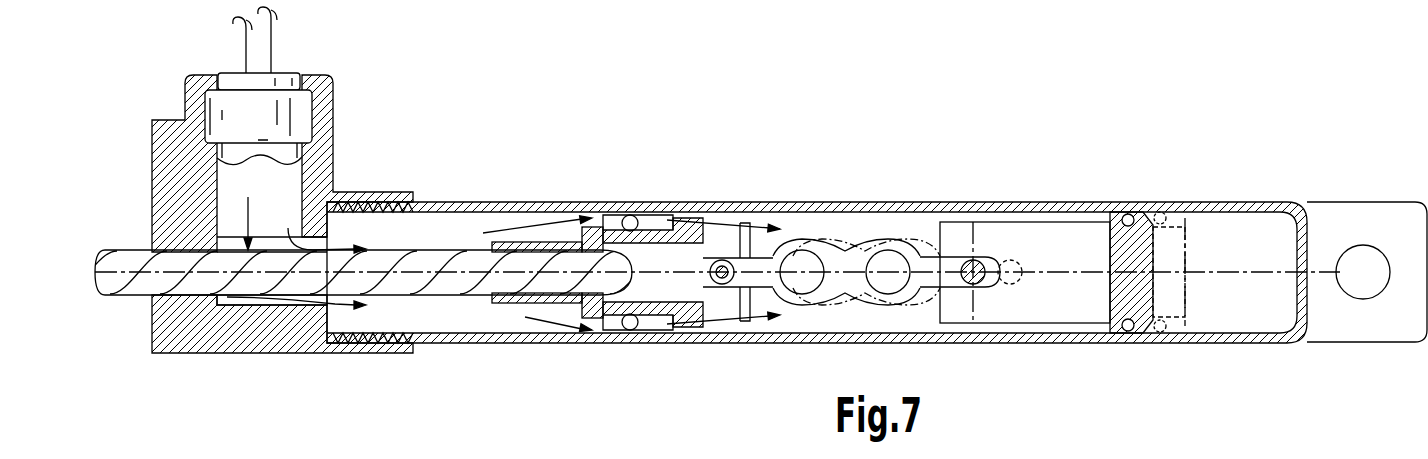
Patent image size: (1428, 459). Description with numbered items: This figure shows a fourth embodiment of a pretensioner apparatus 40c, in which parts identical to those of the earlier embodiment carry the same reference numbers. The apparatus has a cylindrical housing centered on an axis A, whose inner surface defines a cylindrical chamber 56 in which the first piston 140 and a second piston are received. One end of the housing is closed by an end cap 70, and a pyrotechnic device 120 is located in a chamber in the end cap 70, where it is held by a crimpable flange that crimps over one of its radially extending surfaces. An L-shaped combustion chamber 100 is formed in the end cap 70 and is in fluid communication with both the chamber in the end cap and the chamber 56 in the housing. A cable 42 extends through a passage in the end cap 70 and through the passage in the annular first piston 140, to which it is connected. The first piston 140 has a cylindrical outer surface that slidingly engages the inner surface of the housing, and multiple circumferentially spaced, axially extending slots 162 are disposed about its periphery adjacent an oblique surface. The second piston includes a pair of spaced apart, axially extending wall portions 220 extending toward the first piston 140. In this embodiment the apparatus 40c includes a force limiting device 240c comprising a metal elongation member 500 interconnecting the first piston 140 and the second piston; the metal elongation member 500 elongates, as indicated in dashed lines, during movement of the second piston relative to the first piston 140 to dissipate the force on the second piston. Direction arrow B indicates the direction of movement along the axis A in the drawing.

The pyrotechnic device 120 is at (292, 60).
The end cap 70 is at (333, 145).
The L-shaped combustion chamber 100 is at (232, 305).
The cable 42 is at (115, 296).
The cylindrical chamber 56 is at (420, 244).
The first piston 140 is at (535, 242).
The axially extending slots 162 is at (600, 332).
The metal elongation member 500 is at (870, 253).
The force limiting device 240c is at (925, 228).
The axially extending wall portions 220 is at (1155, 248).
The pretensioner apparatus 40c is at (893, 158).
The direction B is at (689, 113).
The axis A is at (1212, 331).